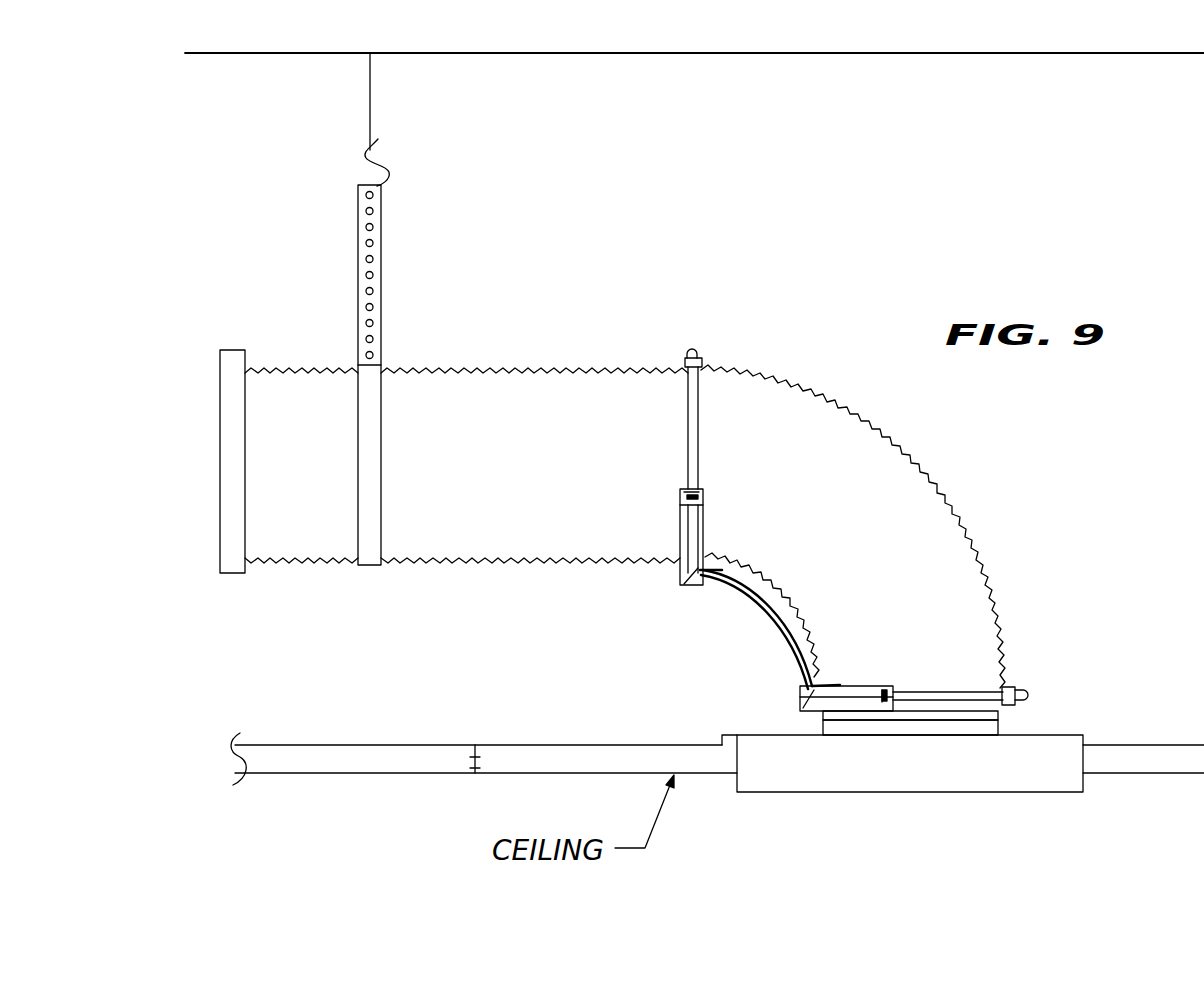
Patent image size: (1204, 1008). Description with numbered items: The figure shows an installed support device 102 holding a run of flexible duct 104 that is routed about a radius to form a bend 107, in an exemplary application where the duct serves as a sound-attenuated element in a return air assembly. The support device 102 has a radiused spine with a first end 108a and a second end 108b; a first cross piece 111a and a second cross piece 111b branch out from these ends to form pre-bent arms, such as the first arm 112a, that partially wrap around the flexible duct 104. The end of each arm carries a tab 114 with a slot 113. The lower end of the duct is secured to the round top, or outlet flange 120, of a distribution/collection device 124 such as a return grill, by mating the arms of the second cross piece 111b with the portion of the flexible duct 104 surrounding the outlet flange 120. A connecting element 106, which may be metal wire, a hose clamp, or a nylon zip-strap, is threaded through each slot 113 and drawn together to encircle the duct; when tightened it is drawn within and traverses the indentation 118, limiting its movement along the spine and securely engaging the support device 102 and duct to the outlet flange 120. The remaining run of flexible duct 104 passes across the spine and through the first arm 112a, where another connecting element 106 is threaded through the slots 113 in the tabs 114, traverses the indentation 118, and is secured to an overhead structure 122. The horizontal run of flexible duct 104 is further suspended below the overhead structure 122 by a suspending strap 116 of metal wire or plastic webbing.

The support device 102 is at (748, 630).
The flexible duct 104 is at (520, 471).
The connecting element 106 is at (702, 362).
The bend 107 is at (968, 463).
The first end 108a is at (724, 535).
The second end 108b is at (848, 628).
The first cross piece 111a is at (660, 527).
The second cross piece 111b is at (874, 665).
The first arm 112a is at (706, 515).
The slot 113 is at (698, 492).
The tab 114 is at (688, 491).
The suspending strap 116 is at (383, 262).
The indentation 118 is at (692, 582).
The outlet flange 120 is at (1003, 724).
The overhead structure 122 is at (480, 54).
The distribution/collection device 124 is at (1017, 793).